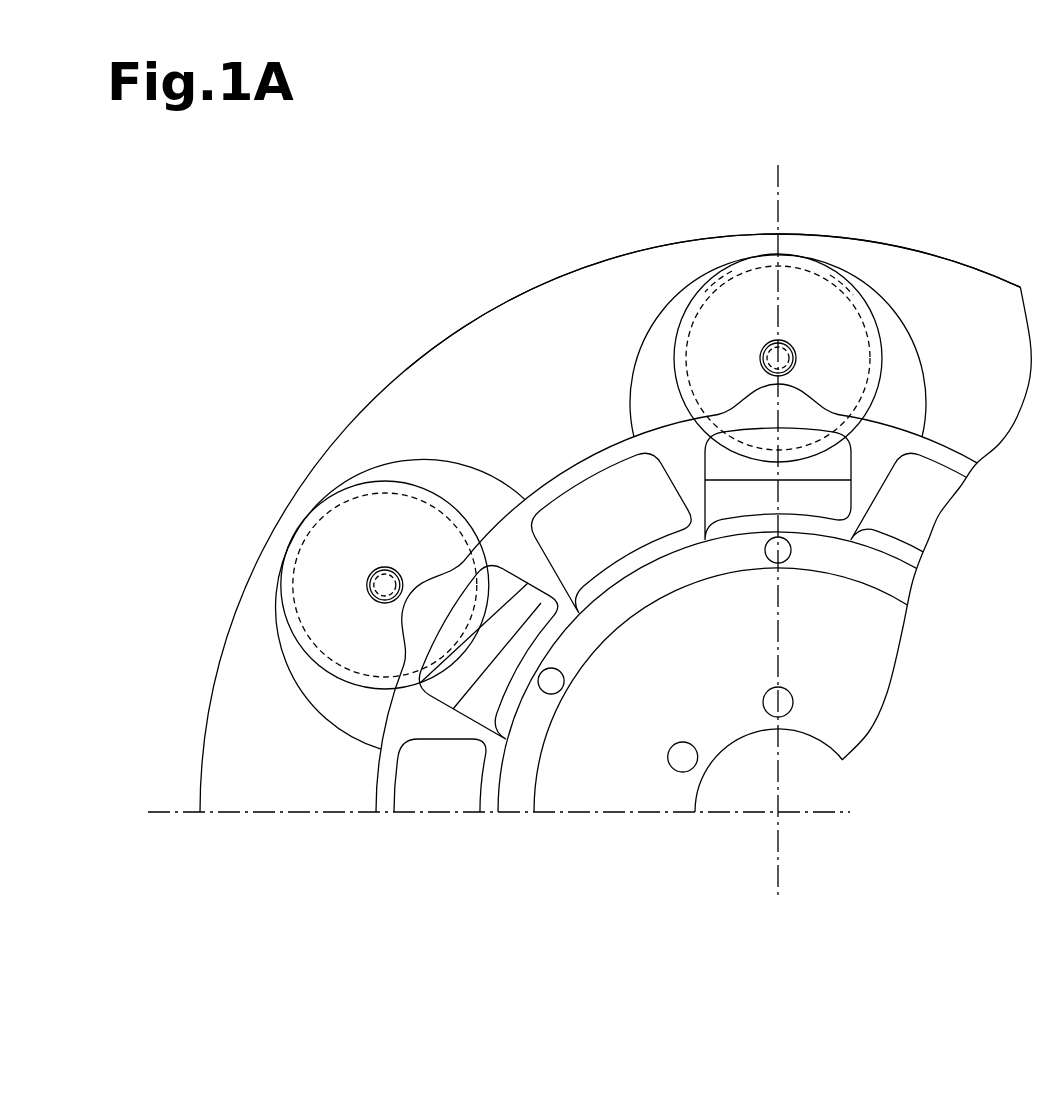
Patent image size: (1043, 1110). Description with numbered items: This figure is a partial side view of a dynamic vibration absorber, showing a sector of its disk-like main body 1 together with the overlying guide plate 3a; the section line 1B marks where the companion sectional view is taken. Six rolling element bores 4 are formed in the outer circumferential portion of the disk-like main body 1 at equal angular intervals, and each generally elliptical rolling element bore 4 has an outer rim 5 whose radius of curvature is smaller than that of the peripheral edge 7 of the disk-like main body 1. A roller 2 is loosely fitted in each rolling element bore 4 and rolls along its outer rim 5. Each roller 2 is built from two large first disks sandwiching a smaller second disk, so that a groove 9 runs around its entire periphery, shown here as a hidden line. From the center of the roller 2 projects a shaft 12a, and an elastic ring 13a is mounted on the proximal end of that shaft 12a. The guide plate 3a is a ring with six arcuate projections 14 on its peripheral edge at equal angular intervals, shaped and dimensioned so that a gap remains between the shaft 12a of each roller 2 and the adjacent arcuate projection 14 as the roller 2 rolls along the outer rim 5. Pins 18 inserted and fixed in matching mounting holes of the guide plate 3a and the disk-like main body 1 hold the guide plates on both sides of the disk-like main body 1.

The disk-like main body 1 is at (482, 338).
The section line 1B is at (790, 175).
The roller 2 is at (711, 352).
The guide plate 3a is at (907, 555).
The rolling element bore 4 is at (917, 358).
The outer rim 5 is at (846, 283).
The peripheral edge 7 is at (630, 252).
The groove 9 is at (727, 283).
The shaft 12a is at (765, 352).
The elastic ring 13a is at (795, 347).
The arcuate projection 14 is at (797, 400).
The pin 18 is at (792, 550).